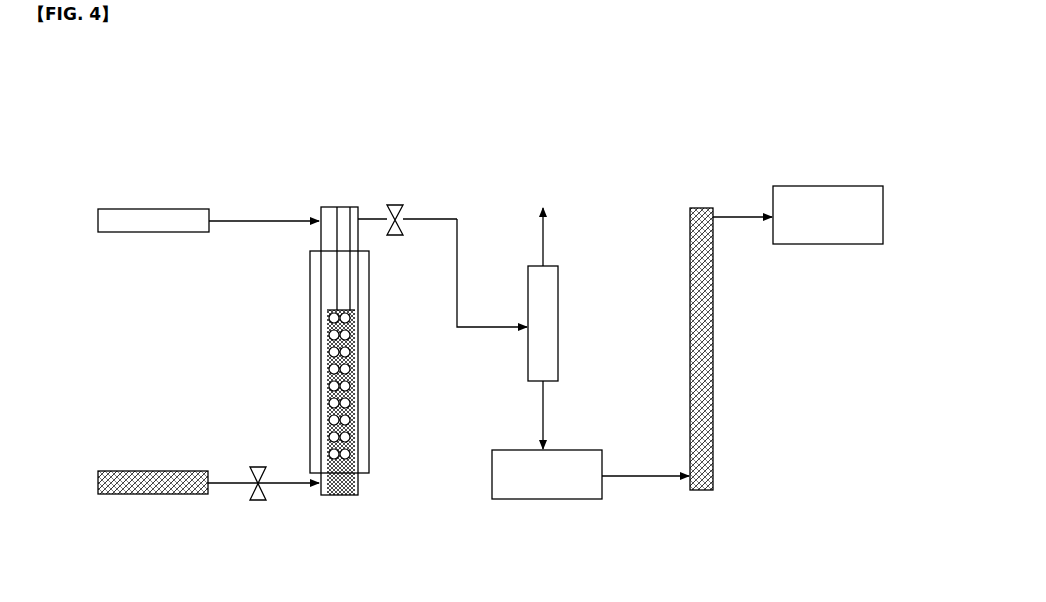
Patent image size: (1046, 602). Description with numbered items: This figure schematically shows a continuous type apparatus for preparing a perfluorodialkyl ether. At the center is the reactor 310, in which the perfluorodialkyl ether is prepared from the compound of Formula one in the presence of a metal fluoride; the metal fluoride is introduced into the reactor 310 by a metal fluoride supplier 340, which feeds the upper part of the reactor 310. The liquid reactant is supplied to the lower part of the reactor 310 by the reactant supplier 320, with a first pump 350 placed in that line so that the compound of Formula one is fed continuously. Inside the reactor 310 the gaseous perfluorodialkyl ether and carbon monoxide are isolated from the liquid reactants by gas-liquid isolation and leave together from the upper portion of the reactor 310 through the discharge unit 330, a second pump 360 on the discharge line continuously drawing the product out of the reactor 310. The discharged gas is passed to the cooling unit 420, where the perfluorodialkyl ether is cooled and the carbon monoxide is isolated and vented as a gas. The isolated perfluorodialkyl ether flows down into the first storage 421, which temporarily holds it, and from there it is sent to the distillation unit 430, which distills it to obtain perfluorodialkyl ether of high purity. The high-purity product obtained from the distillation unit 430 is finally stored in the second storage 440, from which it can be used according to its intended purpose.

The reactor 310 is at (336, 495).
The reactant supplier 320 is at (162, 471).
The discharge unit 330 is at (437, 219).
The metal fluoride supplier 340 is at (165, 209).
The first pump 350 is at (258, 467).
The second pump 360 is at (400, 205).
The cooling unit 420 is at (558, 335).
The first storage 421 is at (548, 499).
The distillation unit 430 is at (713, 292).
The second storage 440 is at (843, 186).